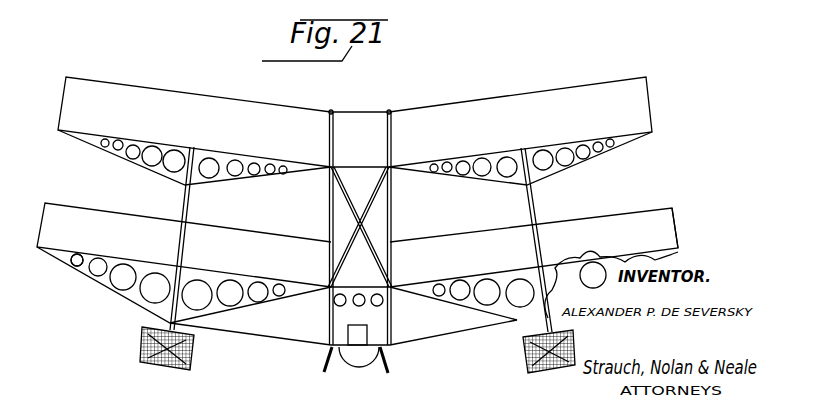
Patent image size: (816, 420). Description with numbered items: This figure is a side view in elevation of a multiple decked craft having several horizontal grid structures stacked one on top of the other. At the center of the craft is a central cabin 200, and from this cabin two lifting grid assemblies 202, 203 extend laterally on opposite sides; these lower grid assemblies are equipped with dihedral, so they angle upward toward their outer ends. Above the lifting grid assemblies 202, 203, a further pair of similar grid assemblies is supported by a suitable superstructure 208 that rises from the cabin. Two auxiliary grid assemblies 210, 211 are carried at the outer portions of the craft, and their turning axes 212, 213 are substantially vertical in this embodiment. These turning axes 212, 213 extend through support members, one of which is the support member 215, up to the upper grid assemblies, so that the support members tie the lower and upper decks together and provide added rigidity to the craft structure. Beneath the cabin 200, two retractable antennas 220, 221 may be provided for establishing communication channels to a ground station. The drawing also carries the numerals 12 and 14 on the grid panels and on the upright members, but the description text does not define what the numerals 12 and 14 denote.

The wing panel 12 is at (218, 96).
The strut 14 is at (190, 148).
The central cabin 200 is at (388, 318).
The lifting grid assembly 202 is at (75, 275).
The lifting grid assembly 203 is at (683, 246).
The superstructure 208 is at (392, 213).
The auxiliary grid assembly 210 is at (148, 372).
The auxiliary grid assembly 211 is at (530, 368).
The turning axis 212 is at (194, 197).
The turning axis 213 is at (530, 188).
The support member 215 is at (532, 207).
The retractable antenna 220 is at (322, 384).
The retractable antenna 221 is at (398, 374).